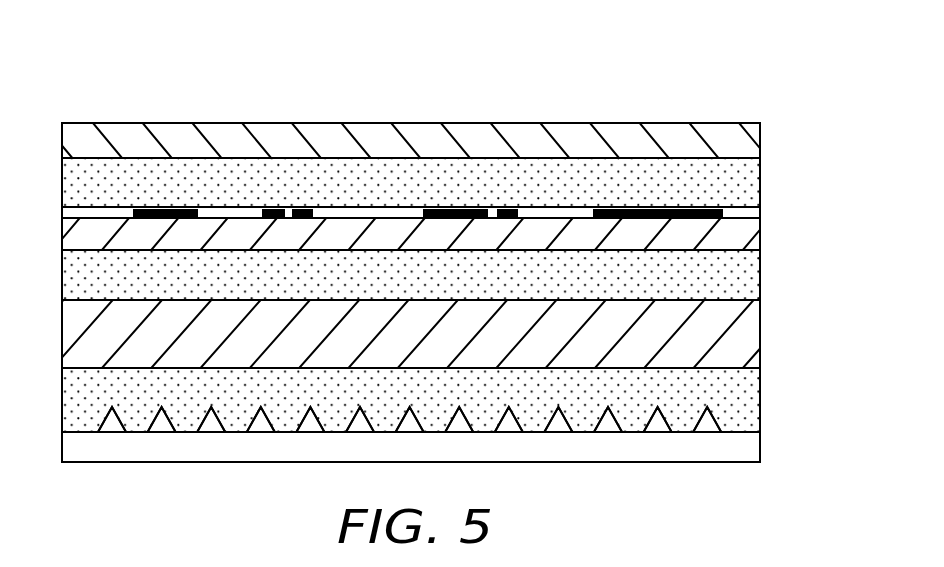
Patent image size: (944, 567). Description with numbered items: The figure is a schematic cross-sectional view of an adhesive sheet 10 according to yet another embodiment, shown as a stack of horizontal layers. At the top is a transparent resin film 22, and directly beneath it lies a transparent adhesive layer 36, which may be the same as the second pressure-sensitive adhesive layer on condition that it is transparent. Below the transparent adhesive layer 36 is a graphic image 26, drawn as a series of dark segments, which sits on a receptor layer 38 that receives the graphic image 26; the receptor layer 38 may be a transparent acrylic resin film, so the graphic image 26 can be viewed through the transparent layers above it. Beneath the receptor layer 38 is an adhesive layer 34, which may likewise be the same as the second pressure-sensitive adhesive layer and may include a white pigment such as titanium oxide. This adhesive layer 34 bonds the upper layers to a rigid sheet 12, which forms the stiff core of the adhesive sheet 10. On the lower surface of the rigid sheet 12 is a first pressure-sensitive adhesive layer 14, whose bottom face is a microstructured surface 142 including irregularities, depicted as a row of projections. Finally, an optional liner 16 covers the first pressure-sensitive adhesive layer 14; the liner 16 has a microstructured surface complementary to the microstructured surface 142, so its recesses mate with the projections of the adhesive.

The adhesive sheet 10 is at (696, 81).
The transparent resin film 22 is at (743, 143).
The transparent adhesive layer 36 is at (743, 190).
The graphic image 26 is at (178, 207).
The receptor layer 38 is at (743, 240).
The adhesive layer 34 is at (742, 282).
The rigid sheet 12 is at (743, 345).
The first pressure-sensitive adhesive layer 14 is at (743, 410).
The liner 16 is at (743, 452).
The microstructured surface 142 is at (636, 432).